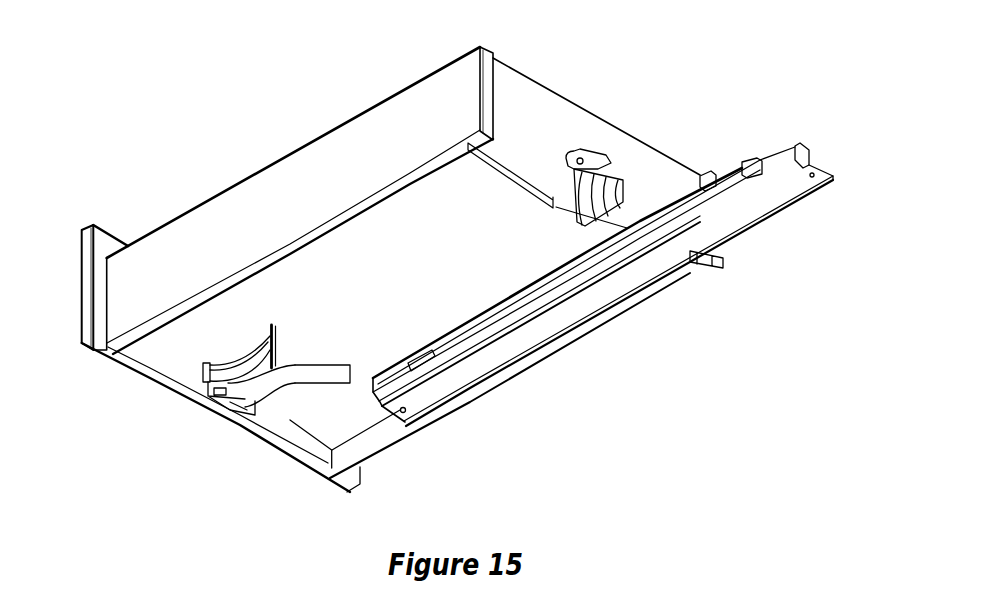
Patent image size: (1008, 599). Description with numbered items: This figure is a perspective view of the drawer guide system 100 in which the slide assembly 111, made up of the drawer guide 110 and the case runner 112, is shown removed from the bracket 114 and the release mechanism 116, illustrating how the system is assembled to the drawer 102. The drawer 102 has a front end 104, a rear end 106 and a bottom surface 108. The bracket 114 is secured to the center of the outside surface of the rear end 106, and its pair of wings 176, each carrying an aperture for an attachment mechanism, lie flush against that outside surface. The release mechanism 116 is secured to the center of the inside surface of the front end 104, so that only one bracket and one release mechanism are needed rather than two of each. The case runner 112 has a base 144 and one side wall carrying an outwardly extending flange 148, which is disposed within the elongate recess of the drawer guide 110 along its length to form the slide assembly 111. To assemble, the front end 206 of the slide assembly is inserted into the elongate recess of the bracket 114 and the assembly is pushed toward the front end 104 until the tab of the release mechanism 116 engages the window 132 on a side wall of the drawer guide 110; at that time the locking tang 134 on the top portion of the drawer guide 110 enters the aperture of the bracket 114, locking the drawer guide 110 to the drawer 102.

The drawer guide system 100 is at (618, 343).
The drawer 102 is at (294, 182).
The front end 104 is at (82, 310).
The rear end 106 is at (624, 148).
The bottom surface 108 is at (173, 348).
The drawer guide 110 is at (747, 157).
The slide assembly 111 is at (795, 55).
The case runner 112 is at (791, 196).
The bracket 114 is at (596, 138).
The release mechanism 116 is at (212, 446).
The window 132 is at (424, 351).
The locking tang 134 is at (760, 156).
The base 144 is at (750, 217).
The outwardly extending flange 148 is at (808, 150).
The wings 176 is at (572, 166).
The front end of the slide assembly 206 is at (386, 425).